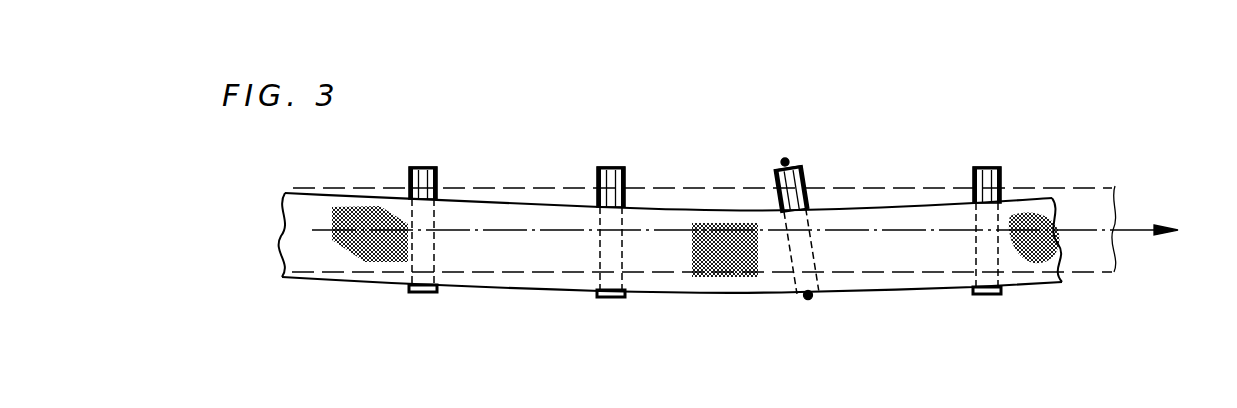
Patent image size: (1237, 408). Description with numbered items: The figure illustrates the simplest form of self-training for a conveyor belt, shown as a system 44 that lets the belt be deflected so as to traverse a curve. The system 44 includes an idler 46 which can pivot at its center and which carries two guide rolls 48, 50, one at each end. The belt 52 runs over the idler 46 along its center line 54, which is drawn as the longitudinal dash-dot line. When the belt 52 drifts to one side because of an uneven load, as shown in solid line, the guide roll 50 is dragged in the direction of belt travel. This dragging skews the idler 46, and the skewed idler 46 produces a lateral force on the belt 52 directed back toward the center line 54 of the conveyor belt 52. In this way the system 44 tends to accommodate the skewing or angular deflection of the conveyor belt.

The system 44 is at (1067, 150).
The idler 46 is at (775, 178).
The guide roll 48 is at (783, 160).
The guide roll 50 is at (810, 298).
The belt 52 is at (1023, 257).
The center line 54 is at (517, 230).